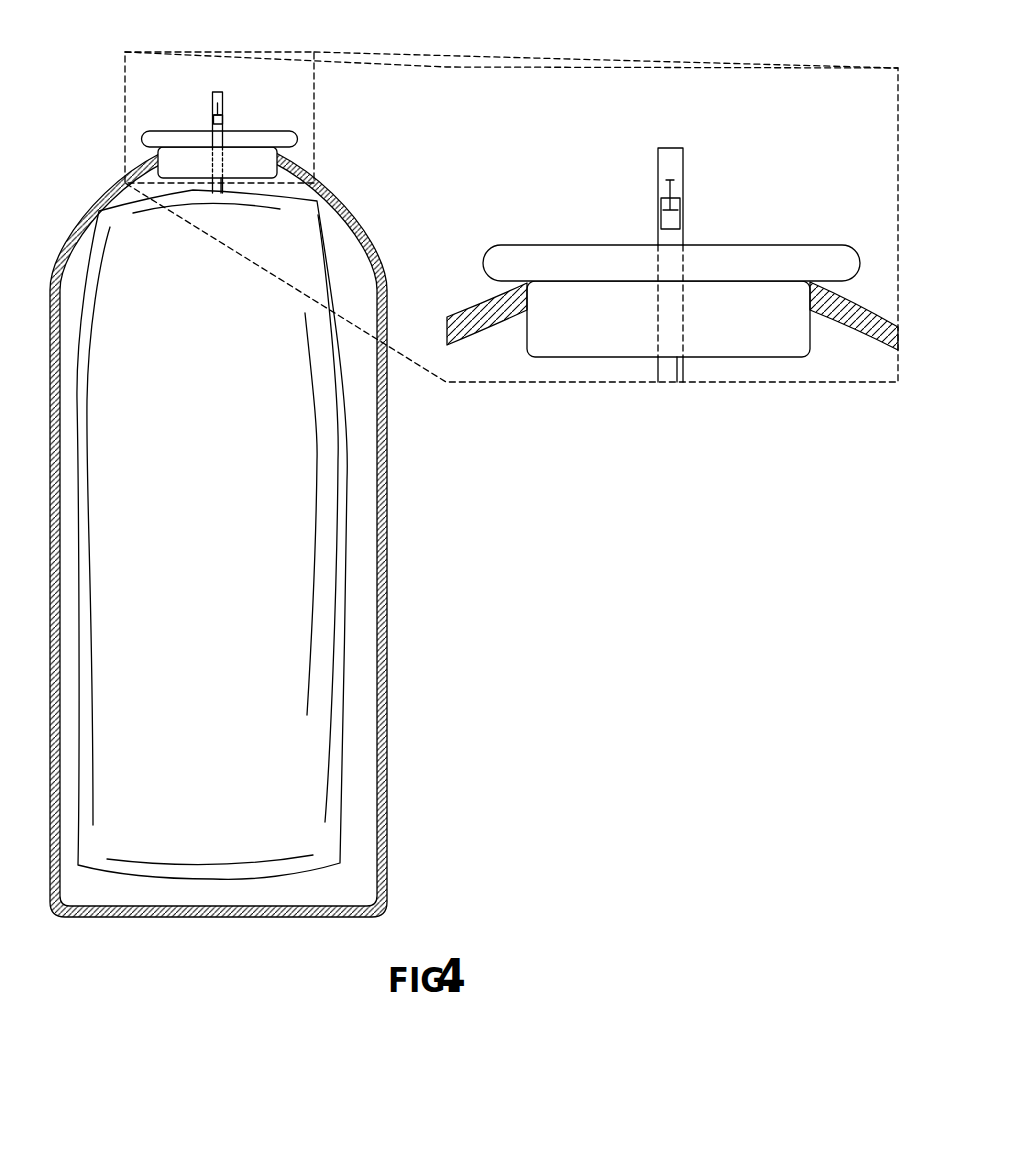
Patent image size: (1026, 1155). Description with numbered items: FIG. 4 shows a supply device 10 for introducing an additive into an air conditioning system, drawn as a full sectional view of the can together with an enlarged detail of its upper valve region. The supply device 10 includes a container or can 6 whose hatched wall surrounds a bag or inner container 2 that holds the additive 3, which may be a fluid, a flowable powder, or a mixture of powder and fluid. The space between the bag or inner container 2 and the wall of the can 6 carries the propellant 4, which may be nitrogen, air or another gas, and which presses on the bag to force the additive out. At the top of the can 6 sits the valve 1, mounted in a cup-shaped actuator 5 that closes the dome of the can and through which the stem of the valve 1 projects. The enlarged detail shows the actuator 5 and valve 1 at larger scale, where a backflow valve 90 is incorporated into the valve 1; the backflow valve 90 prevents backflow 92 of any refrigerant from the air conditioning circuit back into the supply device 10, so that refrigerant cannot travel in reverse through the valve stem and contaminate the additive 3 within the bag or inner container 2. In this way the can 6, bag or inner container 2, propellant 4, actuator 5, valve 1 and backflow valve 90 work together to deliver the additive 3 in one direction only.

The valve 1 is at (211, 102).
The bag or inner container 2 is at (213, 308).
The additive 3 is at (237, 670).
The propellant 4 is at (363, 387).
The actuator 5 is at (252, 140).
The container or can 6 is at (360, 201).
The supply device 10 is at (390, 88).
The backflow valve 90 is at (222, 118).
The backflow 92 is at (672, 183).